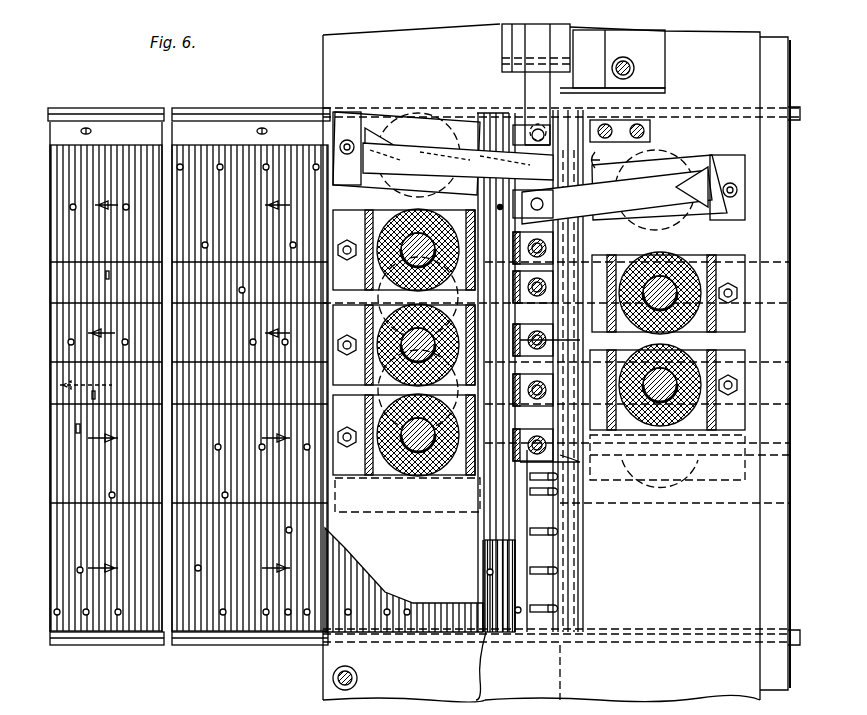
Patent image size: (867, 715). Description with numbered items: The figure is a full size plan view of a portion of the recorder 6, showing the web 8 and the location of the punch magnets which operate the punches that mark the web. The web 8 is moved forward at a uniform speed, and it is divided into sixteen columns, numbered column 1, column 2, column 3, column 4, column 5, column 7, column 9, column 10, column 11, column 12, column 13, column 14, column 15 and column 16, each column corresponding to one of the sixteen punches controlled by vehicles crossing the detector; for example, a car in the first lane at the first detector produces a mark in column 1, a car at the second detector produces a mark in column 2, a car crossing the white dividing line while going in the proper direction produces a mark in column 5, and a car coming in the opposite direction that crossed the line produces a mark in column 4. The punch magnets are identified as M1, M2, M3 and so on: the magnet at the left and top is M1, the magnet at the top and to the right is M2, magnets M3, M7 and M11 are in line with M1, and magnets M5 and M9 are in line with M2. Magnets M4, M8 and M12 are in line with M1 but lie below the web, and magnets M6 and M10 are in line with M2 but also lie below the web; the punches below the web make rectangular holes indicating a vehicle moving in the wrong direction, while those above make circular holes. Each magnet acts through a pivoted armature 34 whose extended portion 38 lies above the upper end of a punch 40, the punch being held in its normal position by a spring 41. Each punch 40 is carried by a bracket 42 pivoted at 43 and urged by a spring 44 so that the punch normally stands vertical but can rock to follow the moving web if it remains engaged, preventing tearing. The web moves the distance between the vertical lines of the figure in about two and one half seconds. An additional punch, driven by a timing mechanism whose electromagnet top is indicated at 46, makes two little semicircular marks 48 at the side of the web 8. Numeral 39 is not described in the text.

The column 1 is at (48, 168).
The column 2 is at (60, 205).
The column 3 is at (65, 242).
The column 4 is at (108, 275).
The column 5 is at (55, 293).
The recorder 6 is at (268, 655).
The column 7 is at (65, 345).
The web 8 is at (130, 122).
The column 9 is at (90, 395).
The column 10 is at (75, 428).
The column 11 is at (65, 452).
The column 12 is at (65, 477).
The column 13 is at (65, 500).
The column 14 is at (60, 530).
The column 15 is at (75, 568).
The column 16 is at (55, 612).
The armature 34 is at (666, 713).
The extended portion 38 is at (599, 713).
The support member 39 is at (487, 713).
The punch 40 is at (556, 389).
The spring 41 is at (562, 342).
The bracket 42 is at (585, 122).
The pivot 43 is at (568, 90).
The spring 44 is at (600, 158).
The electromagnet for timing punch 46 is at (505, 44).
The semicircular marks 48 is at (82, 127).
The punch magnet M1 is at (400, 128).
The punch magnet M2 is at (660, 160).
The punch magnet M3 is at (392, 215).
The punch magnet M4 is at (395, 300).
The punch magnet M5 is at (700, 258).
The punch magnet M6 is at (729, 306).
The punch magnet M7 is at (404, 345).
The punch magnet M8 is at (440, 392).
The punch magnet M9 is at (667, 387).
The punch magnet M10 is at (706, 480).
The punch magnet M11 is at (404, 435).
The punch magnet M12 is at (386, 510).